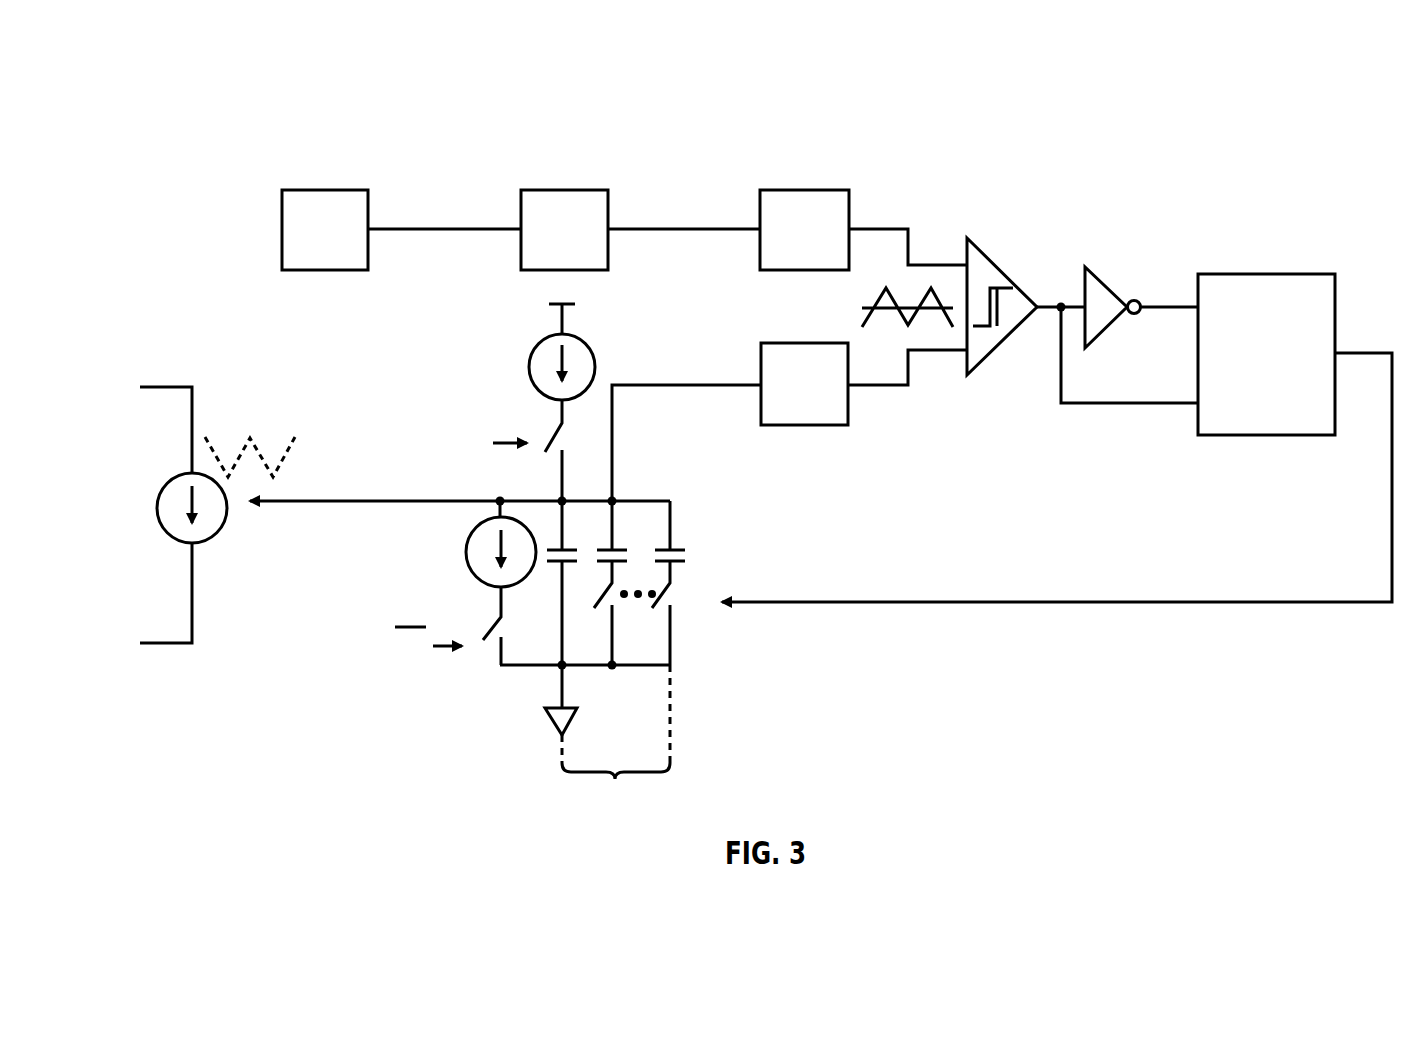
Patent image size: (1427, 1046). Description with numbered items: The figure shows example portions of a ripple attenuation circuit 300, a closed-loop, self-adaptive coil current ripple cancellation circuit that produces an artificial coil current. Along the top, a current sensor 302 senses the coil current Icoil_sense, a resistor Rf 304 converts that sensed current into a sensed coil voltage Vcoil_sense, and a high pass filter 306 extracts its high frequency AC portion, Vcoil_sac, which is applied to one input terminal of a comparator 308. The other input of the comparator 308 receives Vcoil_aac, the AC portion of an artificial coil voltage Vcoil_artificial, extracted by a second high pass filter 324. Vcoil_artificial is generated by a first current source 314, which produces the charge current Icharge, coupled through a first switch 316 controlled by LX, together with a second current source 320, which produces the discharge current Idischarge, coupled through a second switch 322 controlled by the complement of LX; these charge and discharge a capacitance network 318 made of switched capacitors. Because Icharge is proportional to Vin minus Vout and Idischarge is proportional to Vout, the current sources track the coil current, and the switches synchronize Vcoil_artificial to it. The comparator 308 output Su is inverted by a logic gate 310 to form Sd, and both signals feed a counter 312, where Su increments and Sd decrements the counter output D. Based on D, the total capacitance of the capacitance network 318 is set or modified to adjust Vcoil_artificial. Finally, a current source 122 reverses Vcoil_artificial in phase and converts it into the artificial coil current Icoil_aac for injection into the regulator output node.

The ripple attenuation circuit 300 is at (1302, 168).
The current sensor 302 is at (327, 190).
The resistor Rf 304 is at (565, 190).
The high pass filter 306 is at (804, 190).
The comparator 308 is at (986, 257).
The logic gate 310 is at (1088, 266).
The counter 312 is at (1266, 274).
The first current source 314 is at (567, 326).
The first switch 316 is at (560, 425).
The capacitance network 318 is at (666, 496).
The second current source 320 is at (466, 552).
The second switch 322 is at (496, 644).
The high pass filter 324 is at (805, 343).
The current source 122 is at (157, 508).